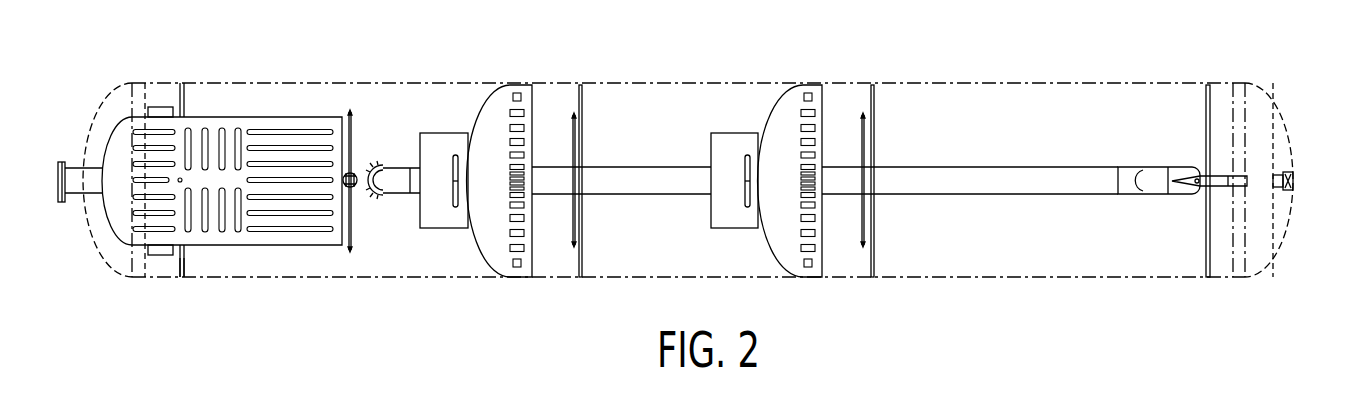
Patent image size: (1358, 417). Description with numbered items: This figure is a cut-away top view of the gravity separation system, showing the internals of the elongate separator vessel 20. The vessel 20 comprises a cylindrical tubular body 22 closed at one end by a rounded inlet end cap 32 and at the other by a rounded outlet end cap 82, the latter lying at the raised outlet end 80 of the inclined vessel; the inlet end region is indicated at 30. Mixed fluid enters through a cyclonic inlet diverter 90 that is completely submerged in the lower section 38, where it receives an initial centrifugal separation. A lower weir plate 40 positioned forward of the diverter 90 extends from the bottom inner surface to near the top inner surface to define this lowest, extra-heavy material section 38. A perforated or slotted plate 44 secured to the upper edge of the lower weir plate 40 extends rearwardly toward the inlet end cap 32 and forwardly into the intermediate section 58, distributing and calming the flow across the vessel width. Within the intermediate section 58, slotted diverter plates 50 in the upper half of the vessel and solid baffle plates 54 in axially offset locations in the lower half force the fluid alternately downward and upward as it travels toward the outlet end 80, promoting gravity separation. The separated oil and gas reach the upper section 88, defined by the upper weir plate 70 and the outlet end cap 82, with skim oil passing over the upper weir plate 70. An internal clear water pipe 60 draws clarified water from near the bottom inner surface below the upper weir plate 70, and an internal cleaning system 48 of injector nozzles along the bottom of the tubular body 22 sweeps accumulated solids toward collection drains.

The separator vessel 20 is at (993, 58).
The tubular body 22 is at (688, 82).
The first end of vessel 30 is at (82, 120).
The inlet end cap 32 is at (90, 228).
The lower section 38 is at (155, 100).
The lower weir plate 40 is at (183, 248).
The slotted plate 44 is at (237, 115).
The internal cleaning system 48 is at (363, 128).
The slotted diverter plates 50 is at (487, 102).
The solid baffle plates 54 is at (583, 250).
The intermediate section 58 is at (898, 120).
The internal clear water pipe 60 is at (645, 167).
The upper weir plate 70 is at (1208, 248).
The raised outlet end 80 is at (1297, 148).
The outlet end cap 82 is at (1287, 220).
The upper section 88 is at (1257, 135).
The cyclonic inlet diverter 90 is at (160, 108).